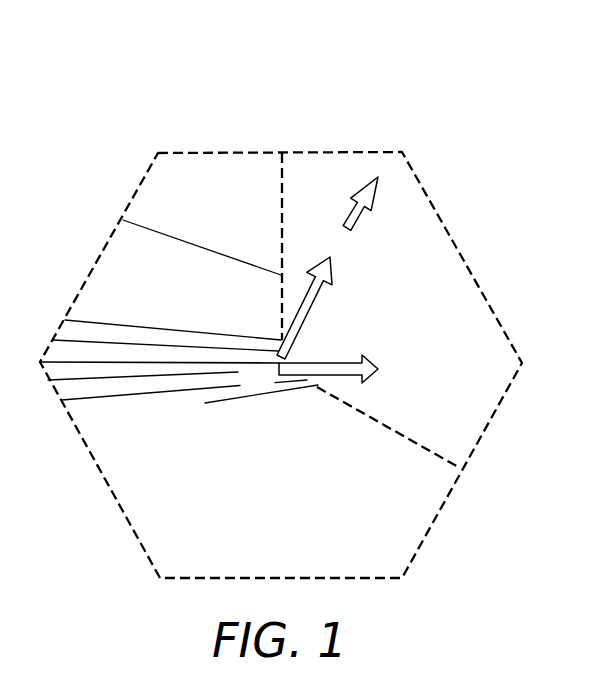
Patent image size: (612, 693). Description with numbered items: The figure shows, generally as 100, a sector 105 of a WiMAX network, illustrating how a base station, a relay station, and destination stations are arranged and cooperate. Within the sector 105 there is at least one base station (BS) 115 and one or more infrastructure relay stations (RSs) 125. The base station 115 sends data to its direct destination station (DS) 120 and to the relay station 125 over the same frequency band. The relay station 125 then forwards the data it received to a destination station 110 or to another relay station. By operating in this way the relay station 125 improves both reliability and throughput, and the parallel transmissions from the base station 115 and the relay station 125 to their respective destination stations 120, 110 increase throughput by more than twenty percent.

The sector, base station, relay station, and destination stations arrangement 100 is at (565, 71).
The sector 105 is at (296, 156).
The destination station 110 is at (432, 145).
The base station 115 is at (258, 397).
The direct destination station 120 is at (408, 357).
The relay station 125 is at (362, 247).